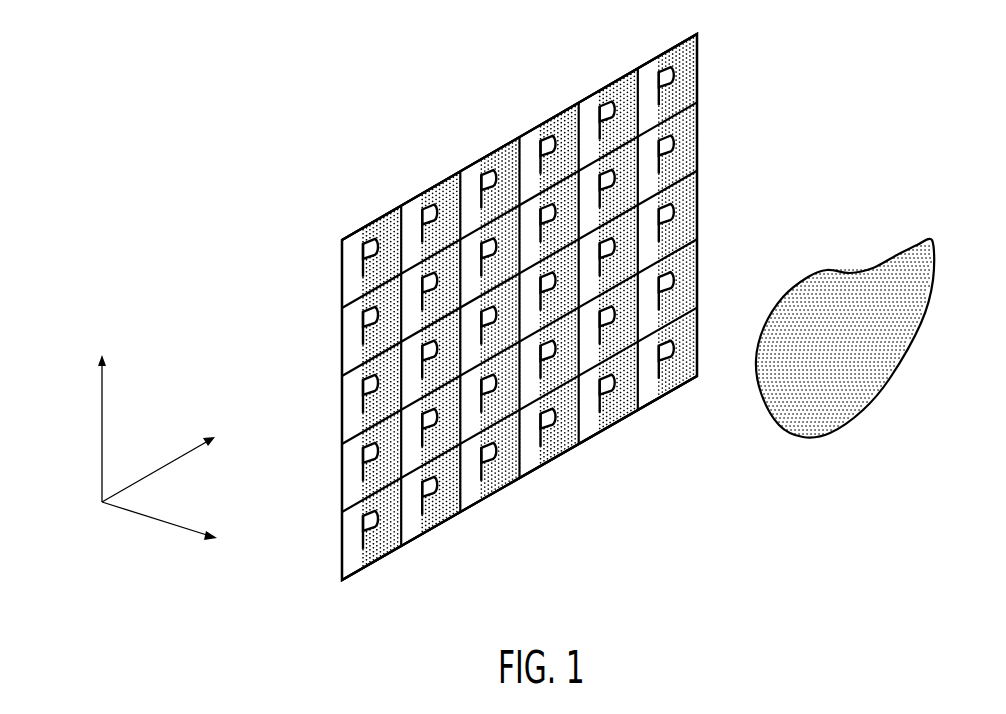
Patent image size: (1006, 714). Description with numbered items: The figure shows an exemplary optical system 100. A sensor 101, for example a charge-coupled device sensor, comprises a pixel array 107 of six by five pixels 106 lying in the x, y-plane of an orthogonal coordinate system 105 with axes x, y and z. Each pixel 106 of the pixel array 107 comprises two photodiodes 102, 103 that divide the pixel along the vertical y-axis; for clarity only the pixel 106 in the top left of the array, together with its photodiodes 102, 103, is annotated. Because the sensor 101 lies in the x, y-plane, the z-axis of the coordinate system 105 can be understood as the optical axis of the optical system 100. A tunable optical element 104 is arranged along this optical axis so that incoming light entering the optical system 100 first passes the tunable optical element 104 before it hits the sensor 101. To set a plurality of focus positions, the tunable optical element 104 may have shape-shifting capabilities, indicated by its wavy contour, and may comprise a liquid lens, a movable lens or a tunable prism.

The optical system 100 is at (685, 590).
The sensor 101 is at (340, 553).
The photodiode 102 is at (362, 270).
The photodiode 103 is at (390, 213).
The tunable optical element 104 is at (932, 240).
The orthogonal coordinate system 105 is at (102, 527).
The pixel 106 is at (334, 232).
The pixel array 107 is at (340, 553).